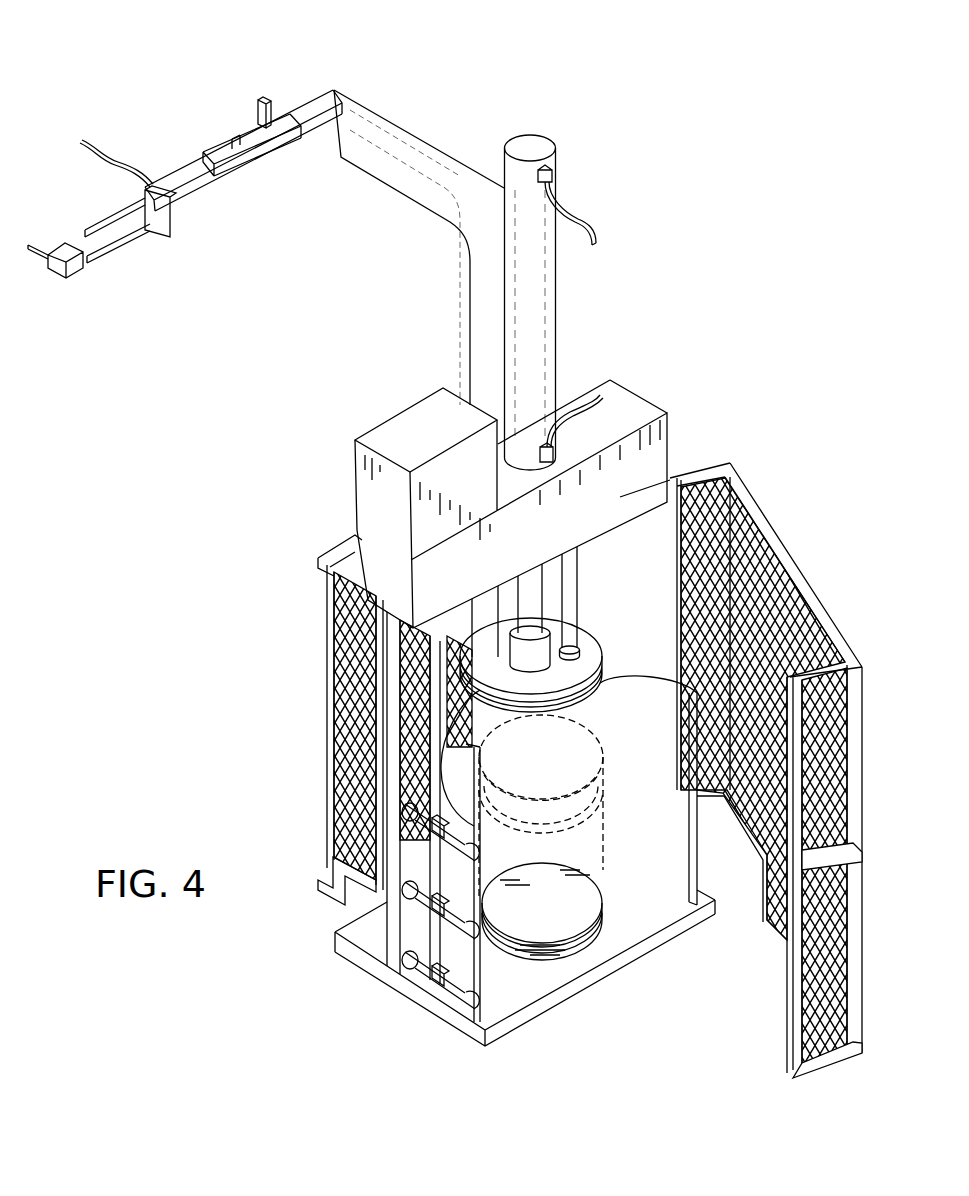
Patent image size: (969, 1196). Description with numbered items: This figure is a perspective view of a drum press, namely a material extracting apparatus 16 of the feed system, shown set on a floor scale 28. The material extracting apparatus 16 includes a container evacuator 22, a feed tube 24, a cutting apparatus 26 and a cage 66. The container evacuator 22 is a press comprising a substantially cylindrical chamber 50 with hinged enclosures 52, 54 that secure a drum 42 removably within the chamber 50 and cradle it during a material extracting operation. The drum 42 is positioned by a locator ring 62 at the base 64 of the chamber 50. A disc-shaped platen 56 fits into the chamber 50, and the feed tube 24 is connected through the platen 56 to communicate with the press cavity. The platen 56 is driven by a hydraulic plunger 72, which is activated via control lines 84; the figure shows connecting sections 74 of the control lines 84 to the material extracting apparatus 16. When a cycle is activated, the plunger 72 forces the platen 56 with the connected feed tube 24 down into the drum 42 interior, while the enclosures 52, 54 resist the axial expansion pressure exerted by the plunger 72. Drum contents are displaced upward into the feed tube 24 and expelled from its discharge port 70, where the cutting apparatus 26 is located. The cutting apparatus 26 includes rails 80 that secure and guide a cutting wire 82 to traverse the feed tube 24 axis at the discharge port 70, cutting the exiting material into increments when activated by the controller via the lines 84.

The material extracting apparatus 16 is at (712, 370).
The container evacuator 22 is at (610, 643).
The feed tube 24 is at (408, 148).
The cutting apparatus 26 is at (222, 140).
The floor scale 28 is at (357, 972).
The drum 42 is at (603, 832).
The cylindrical chamber 50 is at (590, 612).
The hinged enclosure 52 is at (700, 837).
The hinged enclosure 54 is at (465, 965).
The disc-shaped platen 56 is at (470, 672).
The locator ring 62 is at (513, 948).
The base 64 is at (522, 931).
The cage 66 is at (330, 635).
The discharge port 70 is at (318, 98).
The hydraulic plunger 72 is at (543, 315).
The connecting sections 74 is at (592, 227).
The rails 80 is at (205, 218).
The cutting wire 82 is at (263, 98).
The control lines 84 is at (40, 243).